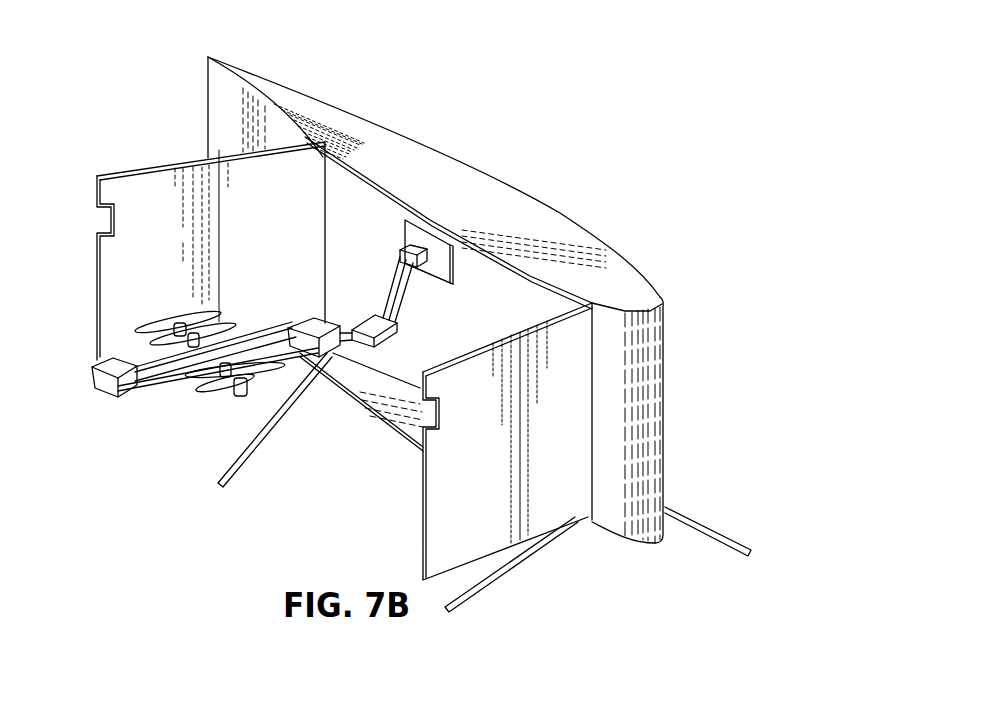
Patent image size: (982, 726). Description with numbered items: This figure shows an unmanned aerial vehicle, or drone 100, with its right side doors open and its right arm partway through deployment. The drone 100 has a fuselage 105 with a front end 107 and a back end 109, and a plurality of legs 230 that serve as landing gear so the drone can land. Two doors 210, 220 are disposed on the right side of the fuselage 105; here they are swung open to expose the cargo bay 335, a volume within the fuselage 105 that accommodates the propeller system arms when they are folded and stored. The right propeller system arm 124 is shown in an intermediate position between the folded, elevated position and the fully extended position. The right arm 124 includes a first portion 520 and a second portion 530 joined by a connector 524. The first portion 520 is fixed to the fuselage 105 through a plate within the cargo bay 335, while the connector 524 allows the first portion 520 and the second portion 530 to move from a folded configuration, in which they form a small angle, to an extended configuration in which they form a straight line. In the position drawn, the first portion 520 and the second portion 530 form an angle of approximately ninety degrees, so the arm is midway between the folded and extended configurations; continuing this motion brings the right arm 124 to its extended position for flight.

The unmanned aerial vehicle 100 is at (470, 118).
The fuselage 105 is at (522, 194).
The front end 107 is at (665, 314).
The back end 109 is at (208, 57).
The right propeller system arm 124 is at (174, 389).
The door 210 is at (93, 323).
The door 220 is at (421, 463).
The legs 230 is at (237, 460).
The cargo bay 335 is at (370, 211).
The first portion 520 is at (386, 282).
The connector 524 is at (383, 340).
The second portion 530 is at (333, 328).